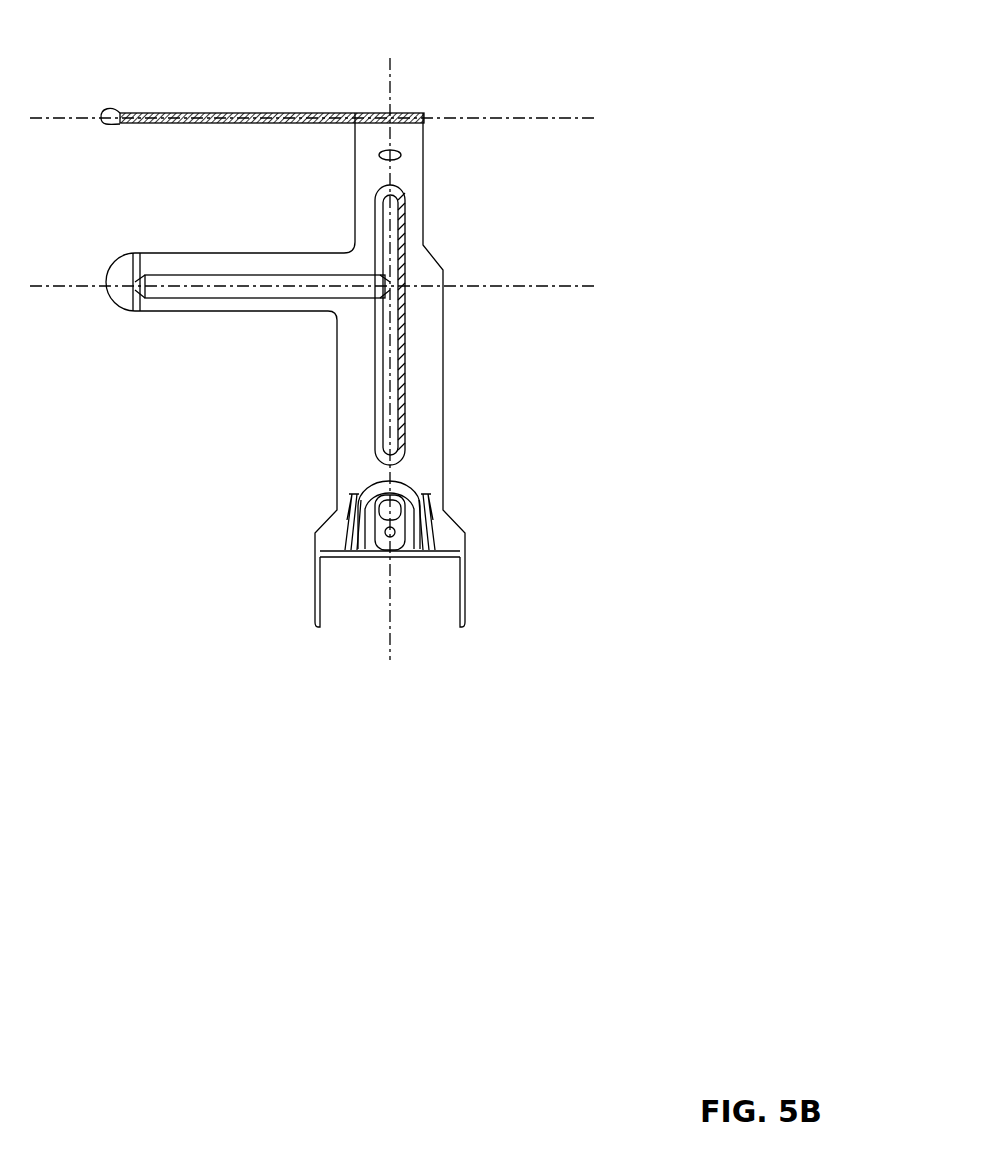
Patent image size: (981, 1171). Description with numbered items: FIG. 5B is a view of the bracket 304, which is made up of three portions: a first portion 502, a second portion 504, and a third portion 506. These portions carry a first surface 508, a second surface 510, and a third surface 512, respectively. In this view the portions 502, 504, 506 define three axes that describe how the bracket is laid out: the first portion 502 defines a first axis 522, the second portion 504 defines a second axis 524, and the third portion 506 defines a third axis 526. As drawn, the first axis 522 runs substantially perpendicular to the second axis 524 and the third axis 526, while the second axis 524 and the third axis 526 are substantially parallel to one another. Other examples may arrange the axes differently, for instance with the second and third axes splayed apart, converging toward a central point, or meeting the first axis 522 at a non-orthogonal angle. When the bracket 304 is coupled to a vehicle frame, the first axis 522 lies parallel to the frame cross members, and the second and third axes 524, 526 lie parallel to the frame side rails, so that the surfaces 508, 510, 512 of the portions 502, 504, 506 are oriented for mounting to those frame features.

The bracket 304 is at (608, 44).
The first portion 502 is at (444, 395).
The second portion 504 is at (240, 312).
The third portion 506 is at (181, 112).
The first surface 508 is at (431, 338).
The second surface 510 is at (283, 266).
The third surface 512 is at (283, 112).
The first axis 522 is at (392, 76).
The second axis 524 is at (504, 123).
The third axis 526 is at (505, 286).